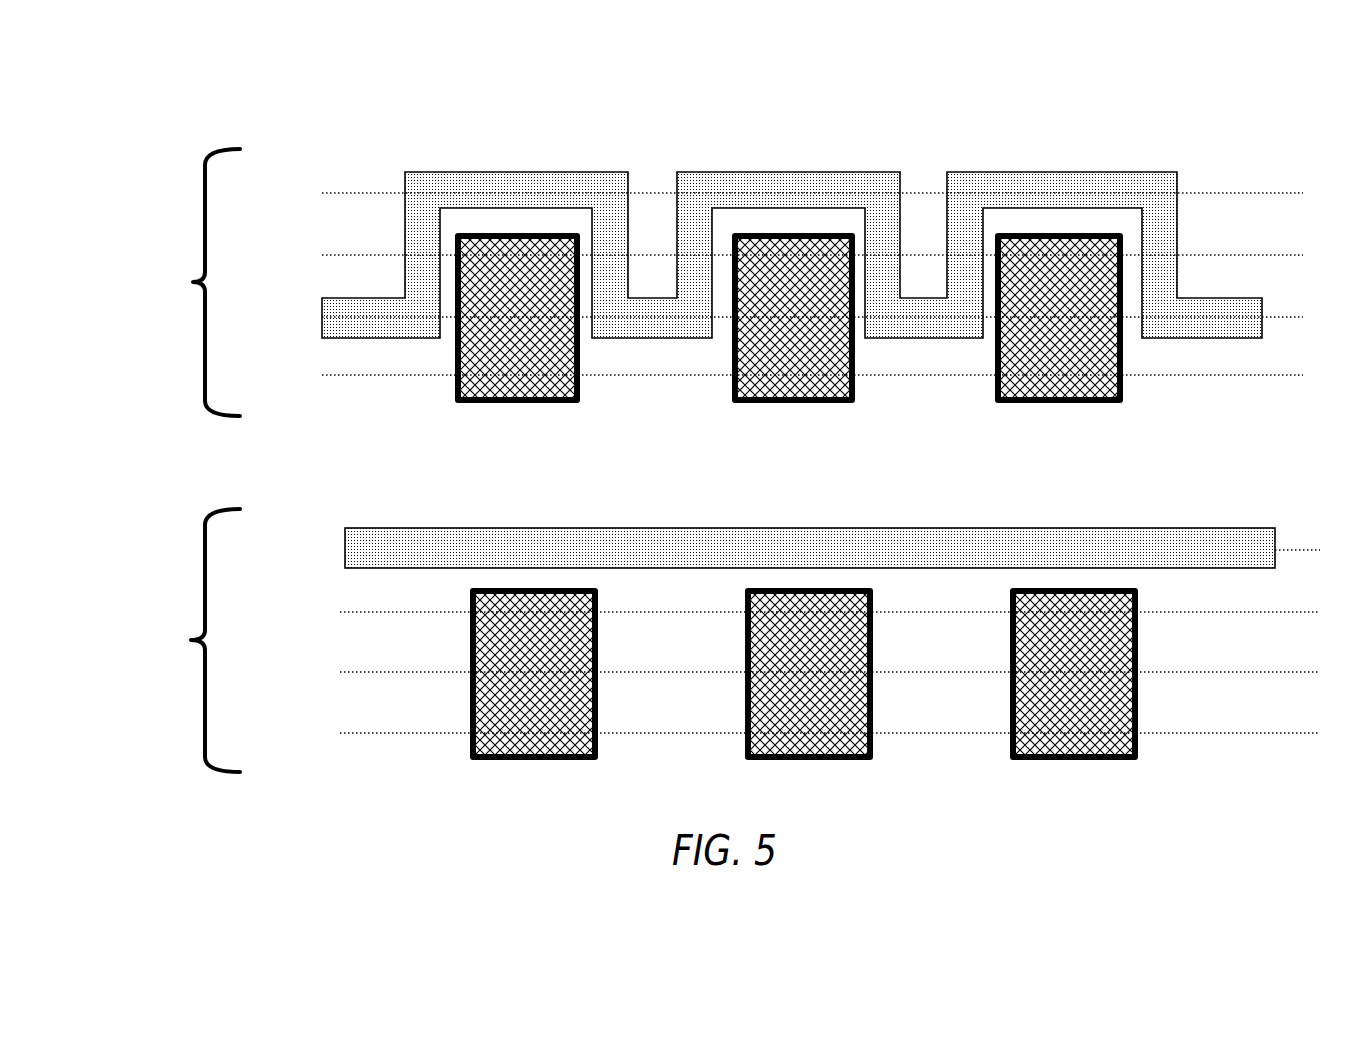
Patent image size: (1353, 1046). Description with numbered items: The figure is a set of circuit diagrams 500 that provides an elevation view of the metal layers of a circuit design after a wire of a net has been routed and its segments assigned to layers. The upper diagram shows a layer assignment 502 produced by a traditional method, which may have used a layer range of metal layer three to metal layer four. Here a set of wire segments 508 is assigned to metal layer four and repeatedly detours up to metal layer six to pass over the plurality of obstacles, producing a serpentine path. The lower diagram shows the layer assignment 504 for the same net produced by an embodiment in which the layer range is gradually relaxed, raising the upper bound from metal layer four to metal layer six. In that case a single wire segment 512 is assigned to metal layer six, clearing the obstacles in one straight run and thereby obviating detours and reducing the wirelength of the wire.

The set of circuit diagrams 500 is at (143, 90).
The layer assignment 502 is at (725, 282).
The layer assignment 504 is at (735, 640).
The set of wire segments 508 is at (407, 172).
The wire segment 512 is at (345, 529).